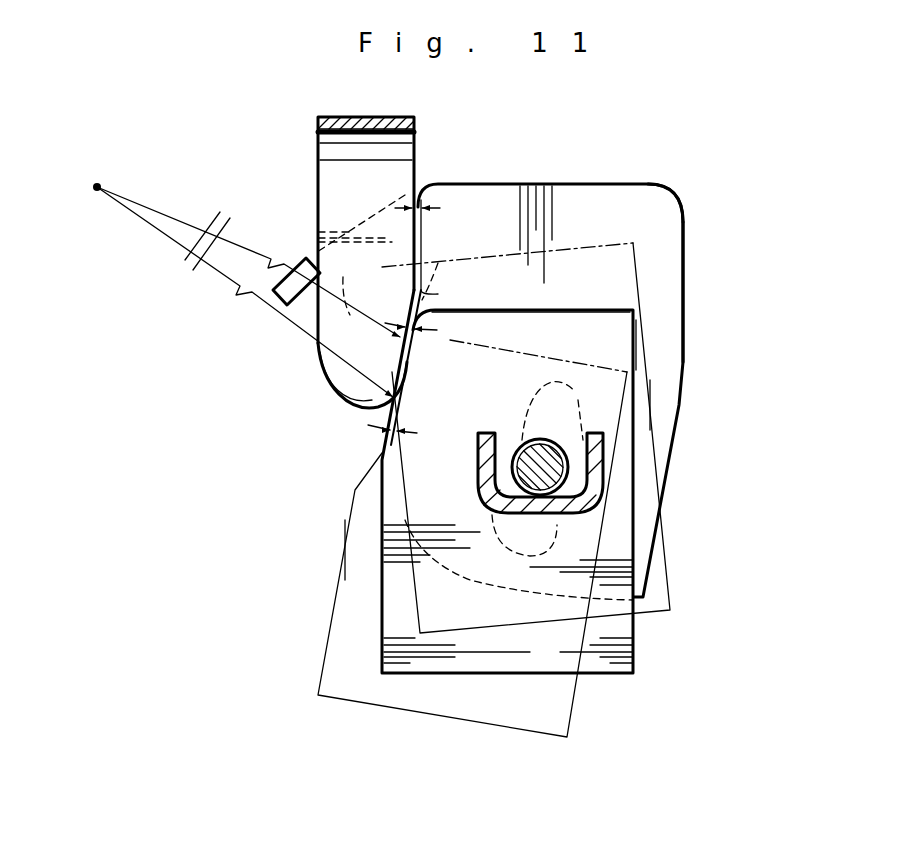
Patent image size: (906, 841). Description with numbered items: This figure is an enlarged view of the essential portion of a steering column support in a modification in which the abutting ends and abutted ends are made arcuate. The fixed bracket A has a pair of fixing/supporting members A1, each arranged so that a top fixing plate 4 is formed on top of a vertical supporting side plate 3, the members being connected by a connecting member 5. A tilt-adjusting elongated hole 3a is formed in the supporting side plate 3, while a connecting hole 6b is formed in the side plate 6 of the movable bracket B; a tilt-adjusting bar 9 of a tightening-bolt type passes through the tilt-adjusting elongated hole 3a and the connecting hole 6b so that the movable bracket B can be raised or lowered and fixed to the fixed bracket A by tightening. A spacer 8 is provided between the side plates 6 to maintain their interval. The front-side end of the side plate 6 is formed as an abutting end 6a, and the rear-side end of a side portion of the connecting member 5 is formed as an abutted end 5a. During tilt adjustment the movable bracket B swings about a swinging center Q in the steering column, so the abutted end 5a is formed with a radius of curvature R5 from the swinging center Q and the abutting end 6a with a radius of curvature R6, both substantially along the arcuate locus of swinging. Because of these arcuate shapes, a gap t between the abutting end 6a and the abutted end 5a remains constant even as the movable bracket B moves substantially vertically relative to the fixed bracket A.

The connecting member 5 is at (420, 148).
The abutted end 5a is at (422, 283).
The top fixing plate 4 is at (510, 184).
The supporting side plate 3 is at (678, 422).
The tilt-adjusting elongated hole 3a is at (550, 378).
The side plate 6 is at (582, 242).
The abutting end 6a is at (410, 282).
The connecting hole 6b is at (550, 440).
The spacer 8 is at (478, 463).
The tilt-adjusting bar 9 is at (520, 440).
The fixing/supporting member A1 is at (688, 200).
The fixed bracket A is at (688, 261).
The movable bracket B is at (644, 344).
The swinging center Q is at (93, 169).
The radius of curvature of the abutted end R5 is at (248, 262).
The radius of curvature of the abutting end R6 is at (245, 292).
The gap t is at (418, 187).